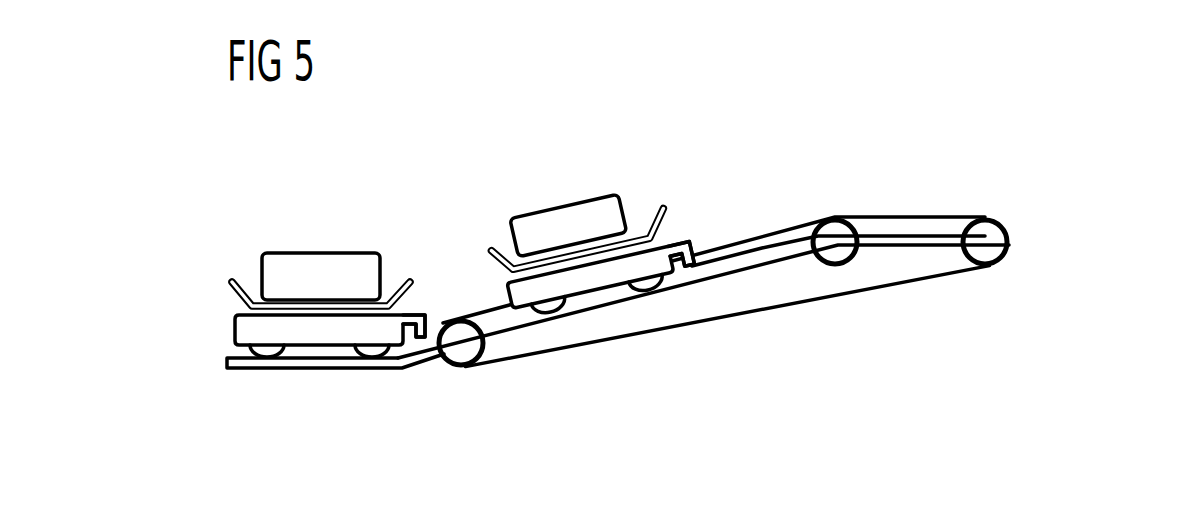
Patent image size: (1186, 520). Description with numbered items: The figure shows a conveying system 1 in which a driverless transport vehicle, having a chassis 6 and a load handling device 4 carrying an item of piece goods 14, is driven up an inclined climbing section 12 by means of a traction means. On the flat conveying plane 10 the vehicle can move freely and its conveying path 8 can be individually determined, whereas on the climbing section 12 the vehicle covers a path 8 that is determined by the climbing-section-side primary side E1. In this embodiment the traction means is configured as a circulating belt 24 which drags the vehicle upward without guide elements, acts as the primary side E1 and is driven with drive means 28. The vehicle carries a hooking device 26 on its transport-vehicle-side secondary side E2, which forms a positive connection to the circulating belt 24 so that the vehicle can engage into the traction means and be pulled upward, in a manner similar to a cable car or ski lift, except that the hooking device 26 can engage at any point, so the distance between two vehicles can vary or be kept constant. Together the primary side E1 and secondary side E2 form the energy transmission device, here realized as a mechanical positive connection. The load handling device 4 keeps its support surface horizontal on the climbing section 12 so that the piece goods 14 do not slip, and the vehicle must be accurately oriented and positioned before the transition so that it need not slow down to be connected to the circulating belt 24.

The conveying system 1 is at (290, 176).
The load handling device 4 is at (398, 284).
The chassis 6 is at (222, 317).
The path 8 is at (552, 184).
The conveying plane 10 is at (397, 389).
The climbing section 12 is at (706, 245).
The item of piece goods 14 is at (330, 267).
The circulating belt 24 is at (915, 214).
The hooking device 26 is at (579, 252).
The drive means 28 is at (985, 204).
The primary side E1 is at (911, 179).
The secondary side E2 is at (420, 314).